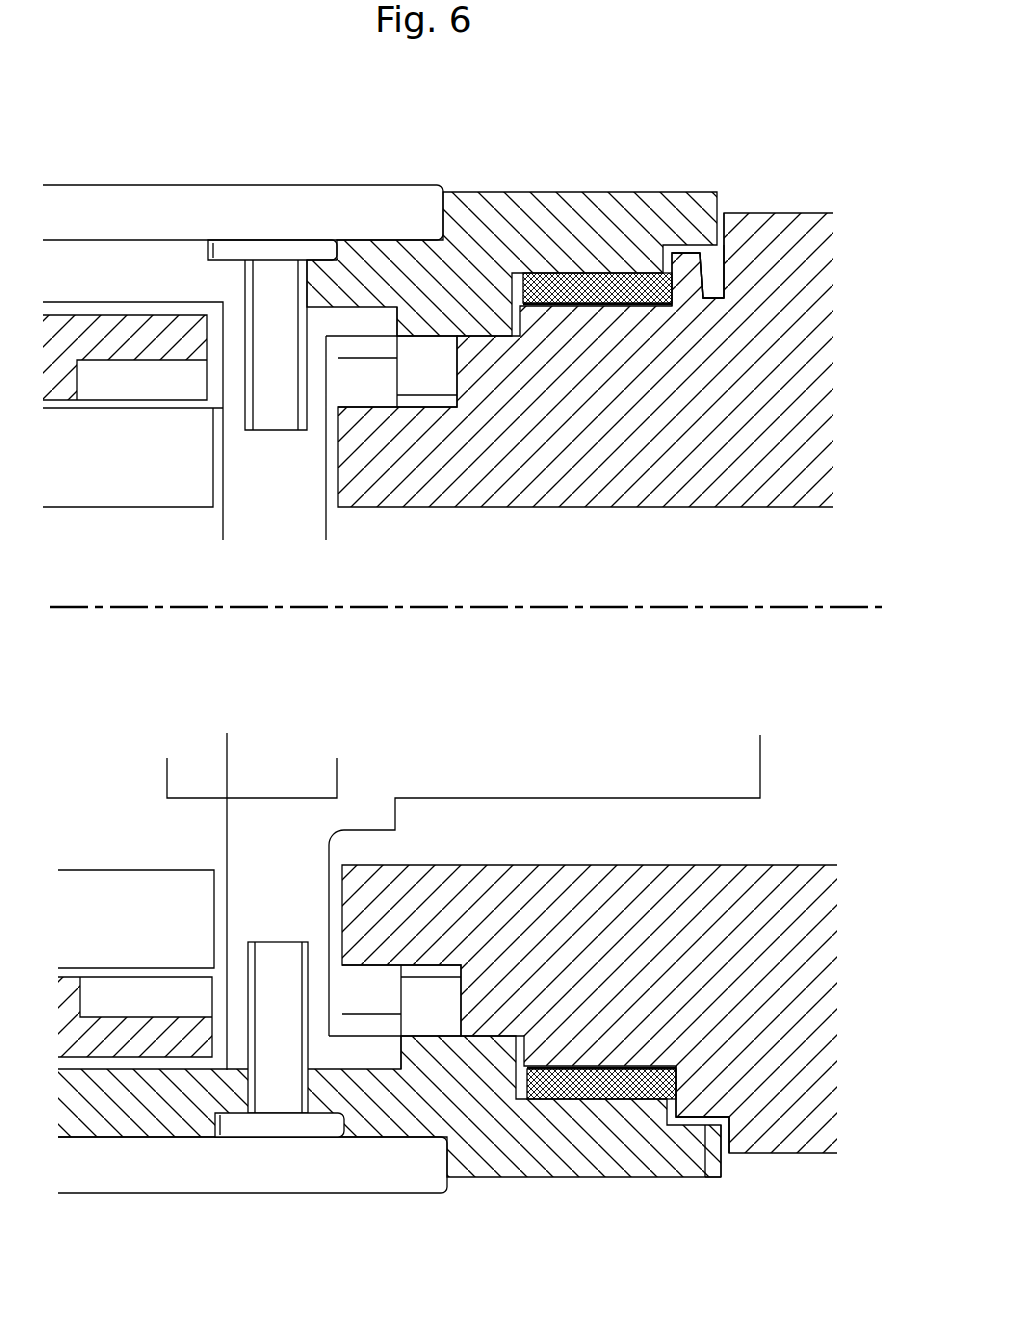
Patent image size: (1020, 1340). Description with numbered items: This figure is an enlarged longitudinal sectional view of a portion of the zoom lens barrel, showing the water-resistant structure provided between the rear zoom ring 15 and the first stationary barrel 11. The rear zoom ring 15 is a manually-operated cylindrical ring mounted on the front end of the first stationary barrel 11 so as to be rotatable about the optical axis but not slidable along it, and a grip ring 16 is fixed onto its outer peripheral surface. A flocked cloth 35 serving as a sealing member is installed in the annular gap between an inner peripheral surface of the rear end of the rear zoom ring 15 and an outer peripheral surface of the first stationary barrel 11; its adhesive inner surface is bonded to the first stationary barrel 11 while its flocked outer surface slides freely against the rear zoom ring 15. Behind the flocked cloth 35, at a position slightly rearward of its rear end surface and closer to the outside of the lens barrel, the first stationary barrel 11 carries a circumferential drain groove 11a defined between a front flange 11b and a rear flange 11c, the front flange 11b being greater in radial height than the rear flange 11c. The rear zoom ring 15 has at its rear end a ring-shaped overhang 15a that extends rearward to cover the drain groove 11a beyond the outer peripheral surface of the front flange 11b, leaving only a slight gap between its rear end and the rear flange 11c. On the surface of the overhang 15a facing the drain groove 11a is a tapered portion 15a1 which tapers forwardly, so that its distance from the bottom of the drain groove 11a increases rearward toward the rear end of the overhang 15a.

The first stationary barrel 11 is at (807, 236).
The drain groove 11a is at (694, 268).
The front flange 11b is at (687, 270).
The rear flange 11c is at (727, 218).
The rear zoom ring 15 is at (530, 194).
The overhang 15a is at (711, 258).
The tapered portion 15a1 is at (702, 244).
The grip ring 16 is at (280, 200).
The flocked cloth 35 is at (603, 305).